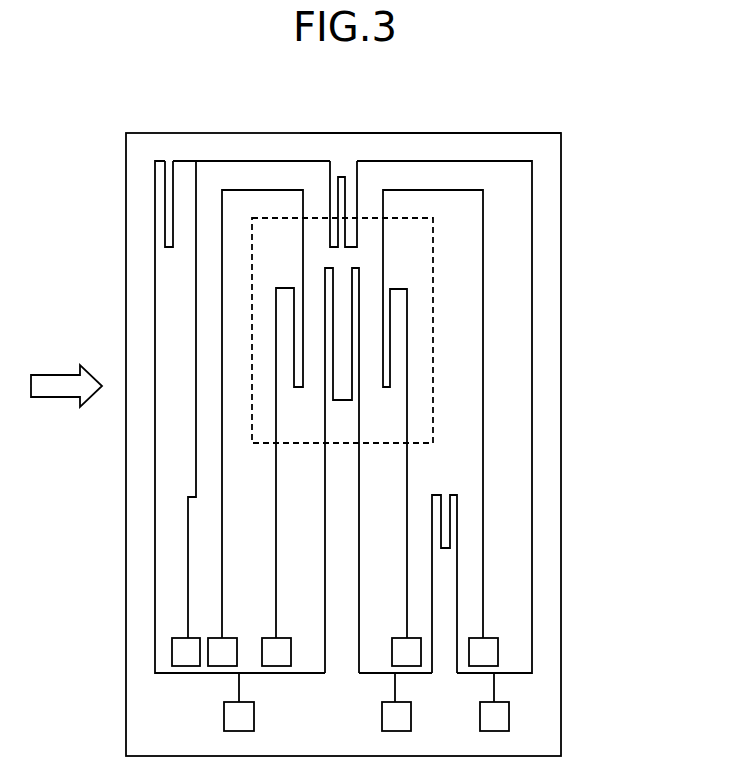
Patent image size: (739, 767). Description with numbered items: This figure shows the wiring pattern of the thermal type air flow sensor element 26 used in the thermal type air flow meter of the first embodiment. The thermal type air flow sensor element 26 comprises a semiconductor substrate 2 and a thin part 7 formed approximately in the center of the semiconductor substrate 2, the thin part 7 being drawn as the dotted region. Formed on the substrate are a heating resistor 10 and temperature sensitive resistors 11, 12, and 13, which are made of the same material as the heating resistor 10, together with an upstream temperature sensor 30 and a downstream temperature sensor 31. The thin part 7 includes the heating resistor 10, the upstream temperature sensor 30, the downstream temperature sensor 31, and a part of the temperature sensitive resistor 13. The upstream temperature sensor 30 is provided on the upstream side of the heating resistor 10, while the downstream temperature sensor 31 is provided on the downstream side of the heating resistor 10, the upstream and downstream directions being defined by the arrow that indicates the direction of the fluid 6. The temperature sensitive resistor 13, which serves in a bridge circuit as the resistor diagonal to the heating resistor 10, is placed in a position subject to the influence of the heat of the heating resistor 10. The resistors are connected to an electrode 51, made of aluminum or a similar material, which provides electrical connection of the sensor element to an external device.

The semiconductor substrate 2 is at (552, 188).
The thermal type air flow sensor element 26 is at (513, 133).
The temperature sensitive resistor 11 is at (155, 190).
The temperature sensitive resistor 13 is at (328, 187).
The heating resistor 10 is at (359, 278).
The upstream temperature sensor 30 is at (277, 318).
The downstream temperature sensor 31 is at (407, 330).
The thin part 7 is at (433, 398).
The temperature sensitive resistor 12 is at (455, 522).
The electrode 51 is at (502, 717).
The fluid 6 is at (55, 397).